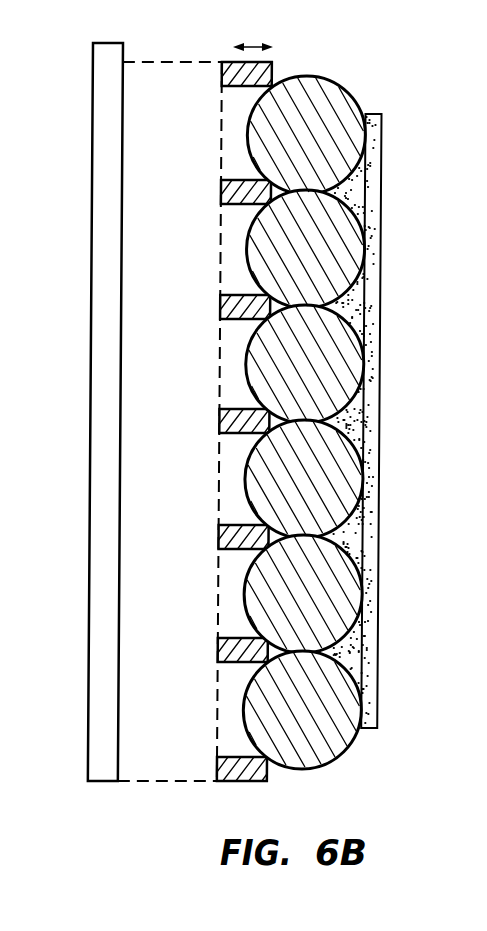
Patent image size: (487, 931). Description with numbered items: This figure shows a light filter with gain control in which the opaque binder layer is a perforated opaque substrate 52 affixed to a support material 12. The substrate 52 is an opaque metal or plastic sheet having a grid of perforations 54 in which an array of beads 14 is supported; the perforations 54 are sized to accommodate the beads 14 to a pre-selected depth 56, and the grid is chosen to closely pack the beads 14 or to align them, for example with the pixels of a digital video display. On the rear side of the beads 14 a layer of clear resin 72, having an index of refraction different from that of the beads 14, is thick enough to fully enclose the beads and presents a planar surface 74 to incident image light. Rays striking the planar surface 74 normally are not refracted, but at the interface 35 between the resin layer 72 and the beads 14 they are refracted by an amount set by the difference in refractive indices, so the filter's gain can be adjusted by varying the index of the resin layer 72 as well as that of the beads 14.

The support material 12 is at (88, 782).
The beads 14 is at (349, 431).
The interface 35 is at (364, 592).
The perforated opaque substrate 52 is at (268, 781).
The perforations 54 is at (222, 118).
The pre-selected depth 56 is at (250, 46).
The resin layer 72 is at (363, 518).
The planar surface 74 is at (382, 301).